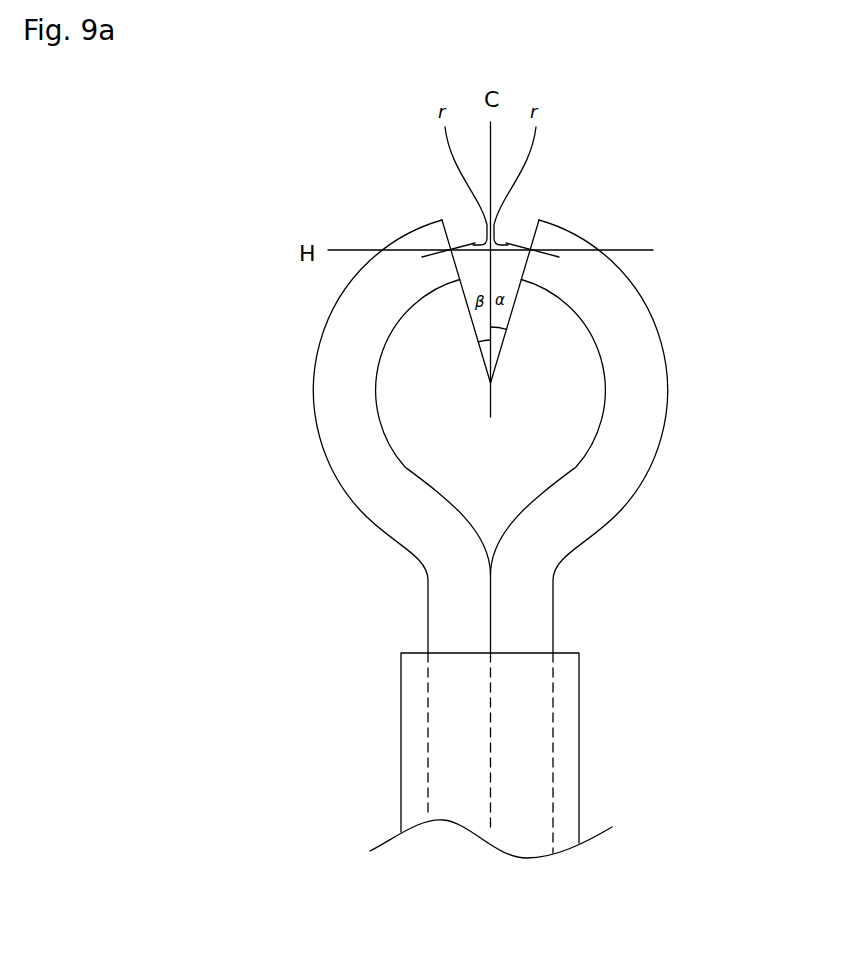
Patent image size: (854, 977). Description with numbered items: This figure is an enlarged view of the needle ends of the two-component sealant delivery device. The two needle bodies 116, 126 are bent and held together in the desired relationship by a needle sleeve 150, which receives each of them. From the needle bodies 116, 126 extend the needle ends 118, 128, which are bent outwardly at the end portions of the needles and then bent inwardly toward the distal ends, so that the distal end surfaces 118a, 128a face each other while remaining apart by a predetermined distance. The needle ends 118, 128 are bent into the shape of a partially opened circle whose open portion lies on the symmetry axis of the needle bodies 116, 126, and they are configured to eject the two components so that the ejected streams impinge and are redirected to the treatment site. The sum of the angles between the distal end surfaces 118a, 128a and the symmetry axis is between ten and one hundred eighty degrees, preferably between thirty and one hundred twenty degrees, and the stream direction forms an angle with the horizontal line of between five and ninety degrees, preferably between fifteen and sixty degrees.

The needle end 128 is at (323, 382).
The needle end 118 is at (643, 452).
The distal end surface 128a is at (452, 240).
The distal end surface 118a is at (529, 240).
The needle body 126 is at (438, 713).
The needle body 116 is at (538, 712).
The needle sleeve 150 is at (580, 778).